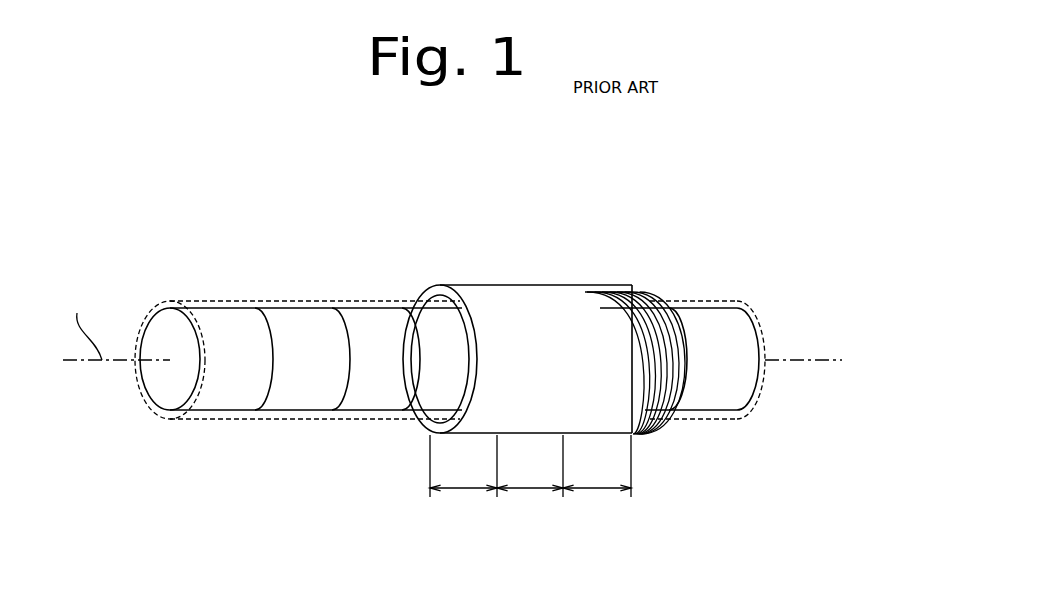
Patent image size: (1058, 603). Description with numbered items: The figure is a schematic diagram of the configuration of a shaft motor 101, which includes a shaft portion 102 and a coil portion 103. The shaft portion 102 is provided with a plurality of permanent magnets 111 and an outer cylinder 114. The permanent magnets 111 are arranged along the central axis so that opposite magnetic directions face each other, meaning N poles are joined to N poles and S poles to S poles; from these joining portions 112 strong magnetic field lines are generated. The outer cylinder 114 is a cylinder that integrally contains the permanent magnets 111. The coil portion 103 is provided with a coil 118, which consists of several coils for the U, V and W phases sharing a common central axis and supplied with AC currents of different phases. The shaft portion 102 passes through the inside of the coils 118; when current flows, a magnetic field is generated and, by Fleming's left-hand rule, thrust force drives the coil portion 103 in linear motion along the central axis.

The shaft motor 101 is at (120, 245).
The shaft portion 102 is at (229, 468).
The coil portion 103 is at (640, 448).
The permanent magnets 111 is at (220, 307).
The joining portions 112 is at (407, 310).
The outer cylinder 114 is at (312, 418).
The coil 118 is at (642, 292).